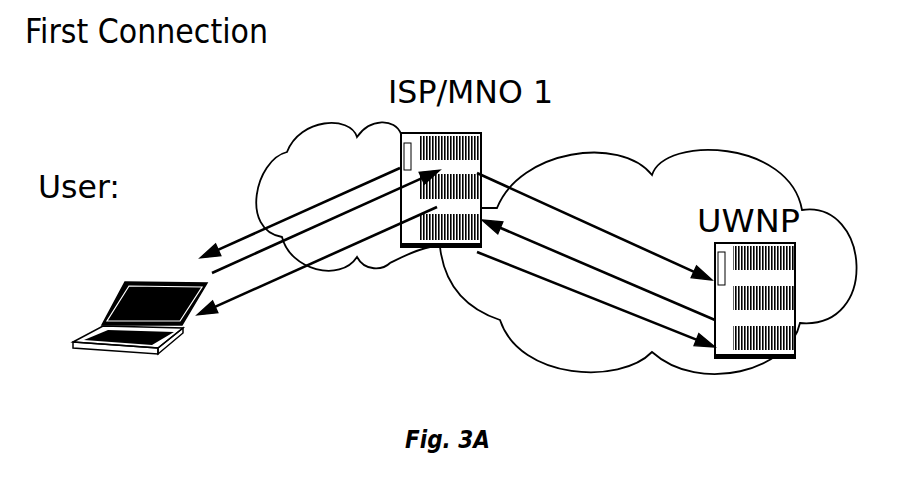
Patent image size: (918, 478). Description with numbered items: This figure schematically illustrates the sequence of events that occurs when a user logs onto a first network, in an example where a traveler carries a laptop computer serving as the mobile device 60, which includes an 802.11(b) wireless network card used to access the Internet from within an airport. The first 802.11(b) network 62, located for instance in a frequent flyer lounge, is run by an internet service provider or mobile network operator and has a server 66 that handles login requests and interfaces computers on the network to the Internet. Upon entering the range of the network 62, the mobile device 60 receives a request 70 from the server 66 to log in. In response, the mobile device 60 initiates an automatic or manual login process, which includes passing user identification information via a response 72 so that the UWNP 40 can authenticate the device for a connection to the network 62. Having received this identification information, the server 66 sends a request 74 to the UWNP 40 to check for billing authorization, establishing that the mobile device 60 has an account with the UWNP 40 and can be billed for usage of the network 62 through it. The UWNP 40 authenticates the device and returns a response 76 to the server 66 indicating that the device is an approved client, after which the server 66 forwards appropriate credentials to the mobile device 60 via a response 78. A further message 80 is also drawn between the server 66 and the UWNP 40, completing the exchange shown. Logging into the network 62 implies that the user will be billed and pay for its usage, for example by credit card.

The UWNP 40 is at (797, 270).
The mobile device 60 is at (118, 297).
The first 802.11(b) network 62 is at (390, 263).
The server 66 is at (481, 141).
The request 70 is at (243, 237).
The response 72 is at (260, 255).
The request 74 is at (598, 230).
The response 76 is at (567, 255).
The response 78 is at (257, 290).
The message from ISP/MNO to UWNP 80 is at (587, 300).